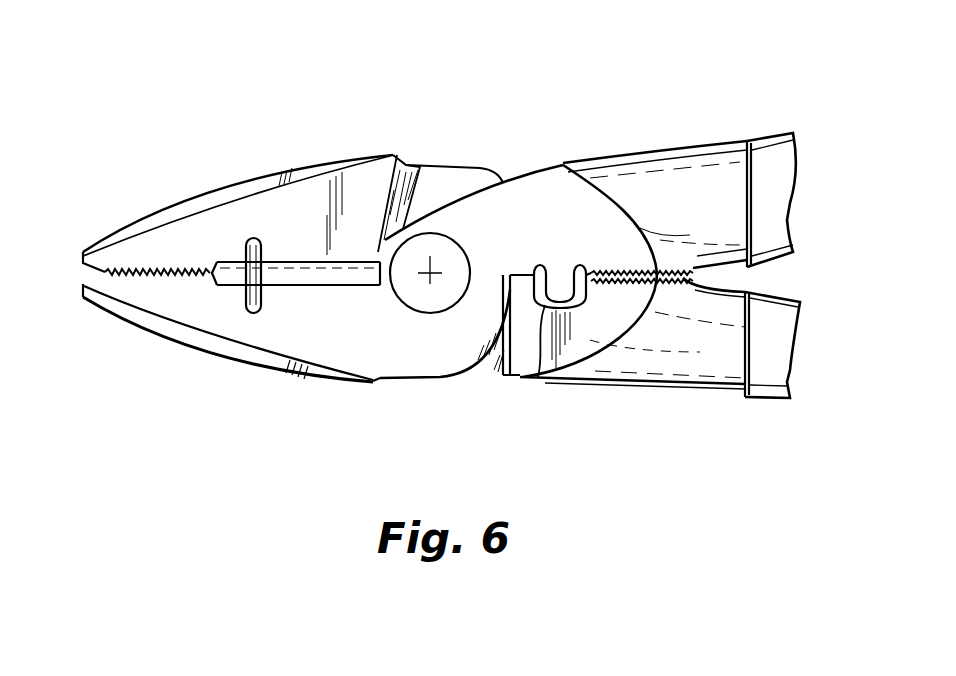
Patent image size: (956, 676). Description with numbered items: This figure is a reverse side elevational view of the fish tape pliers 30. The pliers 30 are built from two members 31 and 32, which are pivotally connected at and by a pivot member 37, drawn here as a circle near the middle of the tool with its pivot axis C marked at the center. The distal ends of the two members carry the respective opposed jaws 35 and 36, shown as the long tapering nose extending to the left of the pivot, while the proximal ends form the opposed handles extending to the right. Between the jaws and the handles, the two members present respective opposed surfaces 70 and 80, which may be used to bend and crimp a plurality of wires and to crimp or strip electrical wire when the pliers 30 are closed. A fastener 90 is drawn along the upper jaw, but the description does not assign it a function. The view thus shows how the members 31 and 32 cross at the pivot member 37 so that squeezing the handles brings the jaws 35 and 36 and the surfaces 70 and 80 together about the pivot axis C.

The fish tape pliers 30 is at (459, 93).
The member 31 is at (658, 183).
The member 32 is at (673, 378).
The jaw 35 is at (152, 230).
The jaw 36 is at (183, 320).
The pivot member 37 is at (457, 263).
The opposed surface 70 is at (538, 380).
The opposed surface 80 is at (625, 272).
The fastener 90 is at (240, 265).
The pivot axis C is at (438, 286).